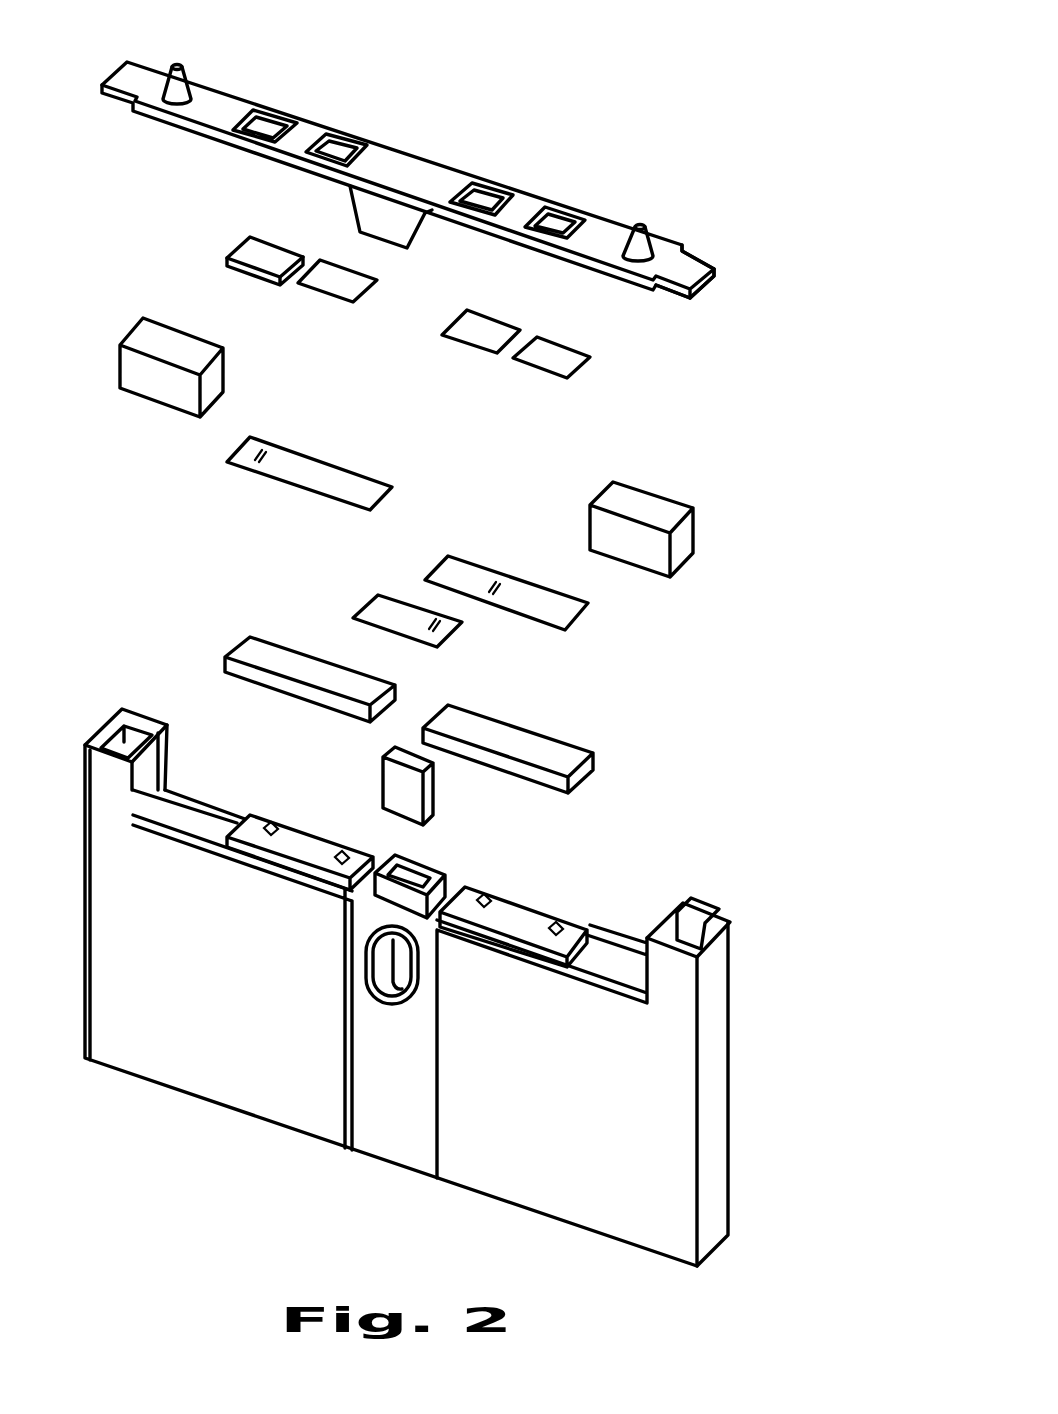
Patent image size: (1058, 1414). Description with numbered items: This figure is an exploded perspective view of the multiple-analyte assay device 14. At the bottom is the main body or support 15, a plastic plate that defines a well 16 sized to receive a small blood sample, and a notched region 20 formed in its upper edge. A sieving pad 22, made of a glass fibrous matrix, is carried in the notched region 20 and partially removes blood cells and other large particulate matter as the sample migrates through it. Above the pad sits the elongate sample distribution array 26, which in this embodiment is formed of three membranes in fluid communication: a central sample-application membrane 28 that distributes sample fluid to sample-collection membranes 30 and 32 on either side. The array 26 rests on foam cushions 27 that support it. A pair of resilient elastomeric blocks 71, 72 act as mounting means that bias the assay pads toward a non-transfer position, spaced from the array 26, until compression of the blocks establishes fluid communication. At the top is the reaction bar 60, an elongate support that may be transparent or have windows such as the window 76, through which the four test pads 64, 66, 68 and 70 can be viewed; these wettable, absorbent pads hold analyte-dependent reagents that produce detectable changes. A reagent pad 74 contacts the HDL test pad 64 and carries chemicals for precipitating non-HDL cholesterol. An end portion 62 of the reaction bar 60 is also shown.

The multiple-analyte assay device 14 is at (504, 987).
The main body or support 15 is at (725, 1132).
The well 16 is at (377, 962).
The notched region 20 is at (423, 872).
The sieving pad 22 is at (437, 785).
The sample distribution array 26 is at (429, 542).
The foam cushions 27 is at (458, 703).
The sample-application membrane 28 is at (385, 633).
The sample-collection membrane 30 is at (227, 463).
The sample-collection membrane 32 is at (587, 603).
The reaction bar 60 is at (430, 152).
The end tab of cover strip 62 is at (716, 266).
The HDL test pad 64 is at (237, 243).
The test pad 66 is at (325, 298).
The test pad 68 is at (467, 345).
The test pad 70 is at (540, 370).
The elastomeric block 71 is at (120, 345).
The elastomeric block 72 is at (697, 532).
The reagent pad 74 is at (255, 281).
The window 76 is at (245, 110).